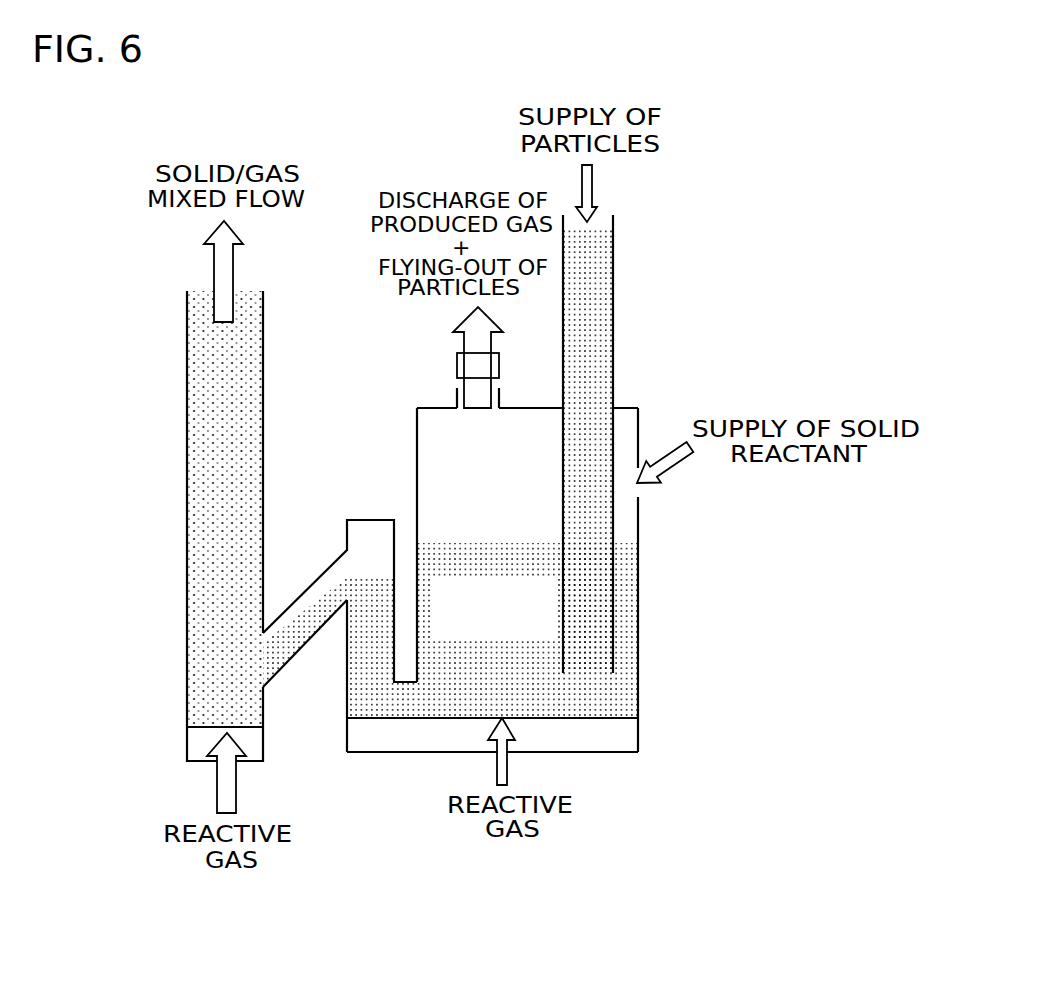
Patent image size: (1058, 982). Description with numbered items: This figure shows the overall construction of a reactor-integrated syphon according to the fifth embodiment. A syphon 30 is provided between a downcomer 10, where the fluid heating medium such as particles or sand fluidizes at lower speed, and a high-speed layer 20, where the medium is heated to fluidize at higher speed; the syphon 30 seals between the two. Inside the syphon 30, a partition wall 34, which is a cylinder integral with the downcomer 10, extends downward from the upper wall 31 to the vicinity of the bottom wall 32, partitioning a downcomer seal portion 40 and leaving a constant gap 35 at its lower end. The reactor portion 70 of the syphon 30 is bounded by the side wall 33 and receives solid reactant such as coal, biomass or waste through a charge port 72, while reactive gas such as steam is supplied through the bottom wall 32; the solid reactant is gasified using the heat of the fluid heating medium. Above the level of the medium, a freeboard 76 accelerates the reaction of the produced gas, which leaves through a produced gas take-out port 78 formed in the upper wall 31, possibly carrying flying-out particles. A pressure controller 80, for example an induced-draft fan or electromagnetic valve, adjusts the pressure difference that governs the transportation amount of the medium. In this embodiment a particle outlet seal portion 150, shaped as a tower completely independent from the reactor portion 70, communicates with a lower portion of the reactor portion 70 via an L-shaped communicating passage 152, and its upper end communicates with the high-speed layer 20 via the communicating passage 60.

The downcomer 10 is at (636, 419).
The high-speed layer 20 is at (237, 382).
The syphon 30 is at (539, 583).
The upper wall 31 is at (530, 407).
The bottom wall 32 is at (595, 722).
The side wall 33 is at (417, 435).
The partition wall 34 is at (617, 527).
The gap 35 is at (592, 692).
The downcomer seal portion 40 is at (600, 595).
The communicating passage 60 is at (286, 650).
The reactor portion 70 is at (519, 621).
The charge port 72 is at (642, 470).
The freeboard 76 is at (505, 496).
The produced gas take-out port 78 is at (457, 398).
The pressure controller 80 is at (457, 360).
The particle outlet seal portion 150 is at (372, 653).
The communicating passage 152 is at (410, 702).